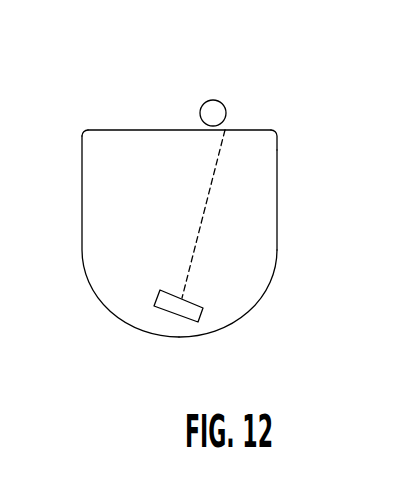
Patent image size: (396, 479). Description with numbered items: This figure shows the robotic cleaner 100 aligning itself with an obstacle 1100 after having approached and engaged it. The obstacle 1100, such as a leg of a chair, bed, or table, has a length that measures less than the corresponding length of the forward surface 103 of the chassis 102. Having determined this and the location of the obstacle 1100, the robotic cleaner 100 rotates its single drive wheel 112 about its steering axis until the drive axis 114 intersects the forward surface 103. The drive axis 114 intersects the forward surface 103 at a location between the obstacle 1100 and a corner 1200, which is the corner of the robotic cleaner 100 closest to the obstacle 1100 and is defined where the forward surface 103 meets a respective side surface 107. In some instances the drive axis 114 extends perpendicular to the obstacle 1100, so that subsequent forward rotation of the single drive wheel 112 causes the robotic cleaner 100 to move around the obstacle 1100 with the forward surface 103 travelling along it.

The robotic cleaner 100 is at (66, 84).
The forward surface 103 is at (155, 129).
The corner 1200 is at (276, 133).
The obstacle 1100 is at (213, 112).
The drive axis 114 is at (233, 189).
The side surface 107 is at (288, 208).
The chassis 102 is at (248, 283).
The single drive wheel 112 is at (196, 313).